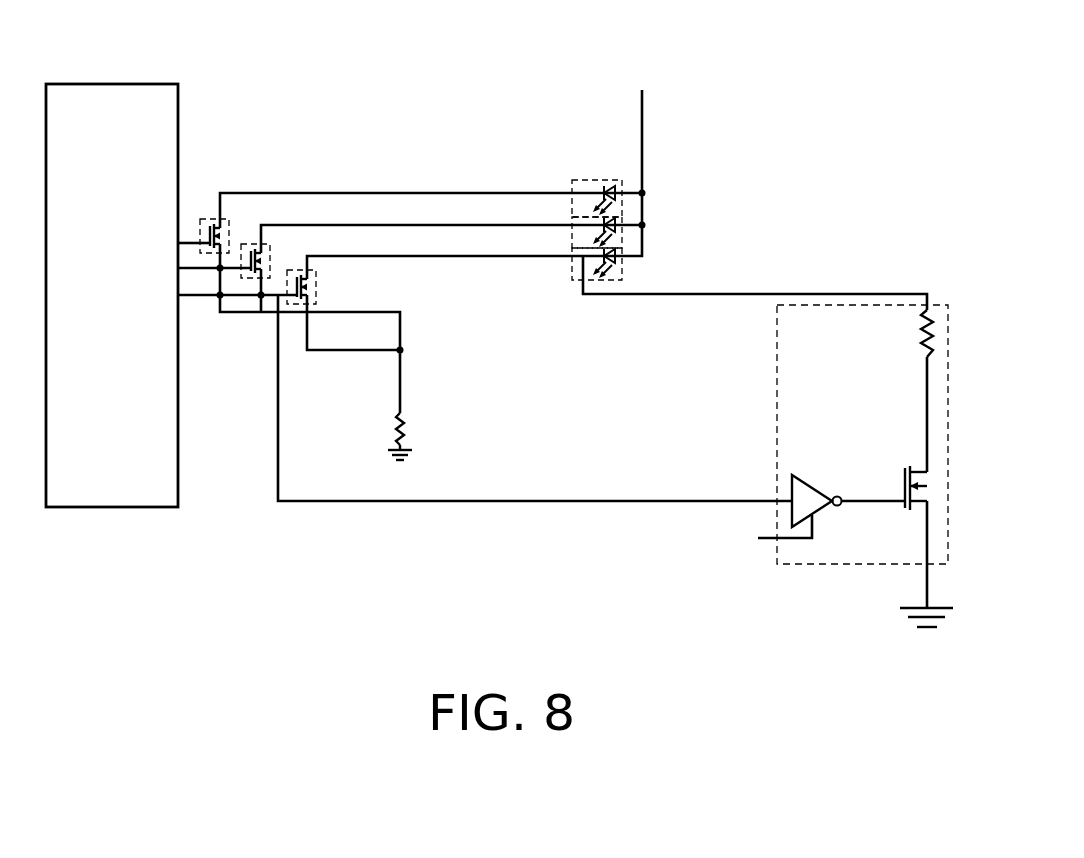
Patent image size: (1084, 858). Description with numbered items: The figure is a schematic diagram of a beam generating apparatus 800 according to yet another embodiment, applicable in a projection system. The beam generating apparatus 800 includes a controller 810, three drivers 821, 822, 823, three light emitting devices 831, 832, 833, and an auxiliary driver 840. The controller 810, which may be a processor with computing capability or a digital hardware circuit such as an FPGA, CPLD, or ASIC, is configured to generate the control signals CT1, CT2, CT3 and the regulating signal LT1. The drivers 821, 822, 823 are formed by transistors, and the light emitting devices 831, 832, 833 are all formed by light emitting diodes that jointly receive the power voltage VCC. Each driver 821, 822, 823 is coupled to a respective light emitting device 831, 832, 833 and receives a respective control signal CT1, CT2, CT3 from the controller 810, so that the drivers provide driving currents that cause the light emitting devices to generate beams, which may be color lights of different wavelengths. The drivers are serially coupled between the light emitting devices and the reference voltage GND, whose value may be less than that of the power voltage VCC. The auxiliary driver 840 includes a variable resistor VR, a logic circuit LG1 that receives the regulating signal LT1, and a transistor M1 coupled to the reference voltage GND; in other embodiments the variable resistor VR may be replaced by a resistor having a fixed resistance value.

The beam generating apparatus 800 is at (499, 353).
The controller 810 is at (111, 84).
The driver 821 is at (229, 219).
The driver 822 is at (270, 246).
The driver 823 is at (318, 290).
The light emitting device 831 is at (598, 180).
The light emitting device 832 is at (572, 235).
The light emitting device 833 is at (572, 262).
The auxiliary driver 840 is at (832, 456).
The control signal CT1 is at (190, 238).
The control signal CT2 is at (188, 298).
The control signal CT3 is at (208, 298).
The power voltage VCC is at (643, 69).
The variable resistor VR is at (909, 333).
The logic circuit LG1 is at (812, 475).
The regulating signal LT1 is at (764, 537).
The transistor M1 is at (905, 512).
The reference voltage GND is at (926, 641).